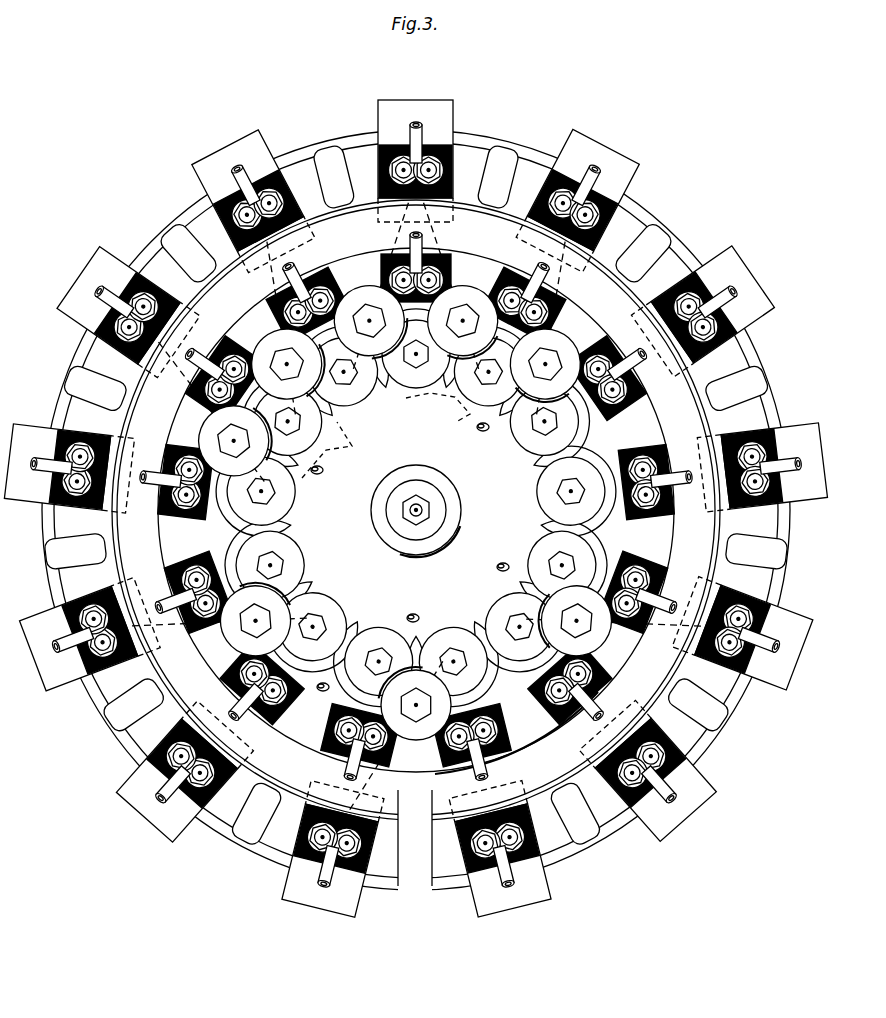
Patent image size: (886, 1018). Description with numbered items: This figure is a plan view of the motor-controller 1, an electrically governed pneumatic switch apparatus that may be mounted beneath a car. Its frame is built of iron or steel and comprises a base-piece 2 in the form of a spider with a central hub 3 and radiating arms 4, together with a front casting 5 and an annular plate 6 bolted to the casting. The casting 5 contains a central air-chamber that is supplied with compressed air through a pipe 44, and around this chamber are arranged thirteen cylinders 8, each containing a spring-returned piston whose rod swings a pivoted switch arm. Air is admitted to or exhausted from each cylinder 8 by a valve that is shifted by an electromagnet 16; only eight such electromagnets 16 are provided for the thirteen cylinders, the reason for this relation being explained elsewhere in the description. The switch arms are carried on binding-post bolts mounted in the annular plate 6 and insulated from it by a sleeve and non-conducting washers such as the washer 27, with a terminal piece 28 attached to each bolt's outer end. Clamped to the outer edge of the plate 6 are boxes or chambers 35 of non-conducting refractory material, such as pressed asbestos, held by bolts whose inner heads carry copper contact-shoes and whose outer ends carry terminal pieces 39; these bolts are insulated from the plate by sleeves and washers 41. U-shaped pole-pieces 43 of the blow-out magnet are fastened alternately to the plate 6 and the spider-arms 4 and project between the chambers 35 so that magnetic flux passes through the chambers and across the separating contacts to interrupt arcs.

The motor-controller 1 is at (416, 510).
The base-piece 2 is at (333, 450).
The central hub 3 is at (416, 508).
The radiating arms 4 is at (466, 404).
The front casting 5 is at (382, 528).
The annular plate 6 is at (196, 316).
The cylinders 8 is at (322, 690).
The electromagnet 16 is at (366, 290).
The washer 27 is at (164, 553).
The terminal piece 28 is at (292, 292).
The boxes or chambers 35 is at (240, 150).
The terminal pieces 39 is at (212, 200).
The washers 41 is at (142, 262).
The U-shaped pole-pieces 43 is at (82, 372).
The pipe 44 is at (428, 511).